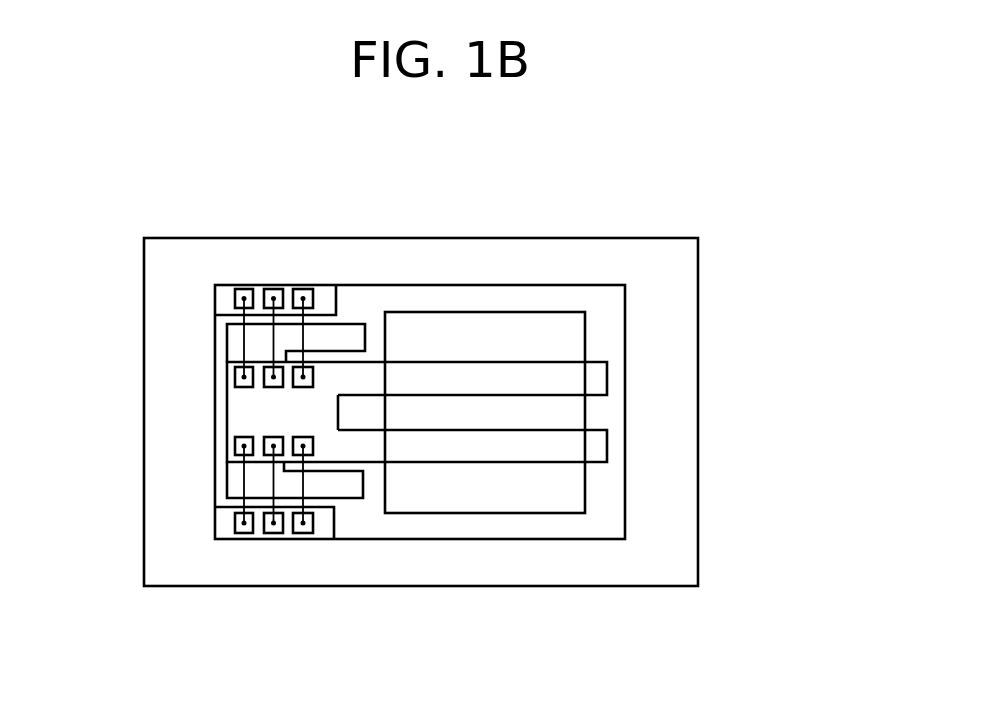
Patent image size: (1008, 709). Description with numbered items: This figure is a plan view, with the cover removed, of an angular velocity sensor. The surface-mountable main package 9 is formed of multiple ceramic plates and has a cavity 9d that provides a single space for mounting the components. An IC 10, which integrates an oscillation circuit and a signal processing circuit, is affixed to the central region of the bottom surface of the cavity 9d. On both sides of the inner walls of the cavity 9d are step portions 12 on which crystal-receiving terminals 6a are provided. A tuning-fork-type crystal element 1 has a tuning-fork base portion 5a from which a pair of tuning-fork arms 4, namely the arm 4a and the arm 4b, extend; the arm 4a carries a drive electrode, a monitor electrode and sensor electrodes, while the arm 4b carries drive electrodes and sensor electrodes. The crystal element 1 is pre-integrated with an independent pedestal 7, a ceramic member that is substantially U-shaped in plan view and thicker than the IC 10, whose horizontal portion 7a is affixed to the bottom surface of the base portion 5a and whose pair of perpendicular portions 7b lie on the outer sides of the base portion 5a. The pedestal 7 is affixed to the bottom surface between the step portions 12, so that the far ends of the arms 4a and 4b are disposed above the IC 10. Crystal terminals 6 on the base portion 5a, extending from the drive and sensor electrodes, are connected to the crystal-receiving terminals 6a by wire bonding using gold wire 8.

The tuning-fork-type crystal element 1 is at (454, 500).
The tuning-fork arms 4 is at (559, 425).
The tuning-fork arm 4a is at (595, 450).
The tuning-fork arm 4b is at (602, 381).
The tuning-fork base portion 5a is at (247, 413).
The crystal terminals 6 is at (245, 288).
The crystal-receiving terminals 6a is at (245, 530).
The independent pedestal 7 is at (261, 414).
The horizontal portion 7a is at (232, 348).
The perpendicular portions 7b is at (357, 333).
The gold wire 8 is at (305, 342).
The main package 9 is at (643, 587).
The cavity 9d is at (603, 302).
The IC 10 is at (516, 497).
The step portions 12 is at (320, 293).